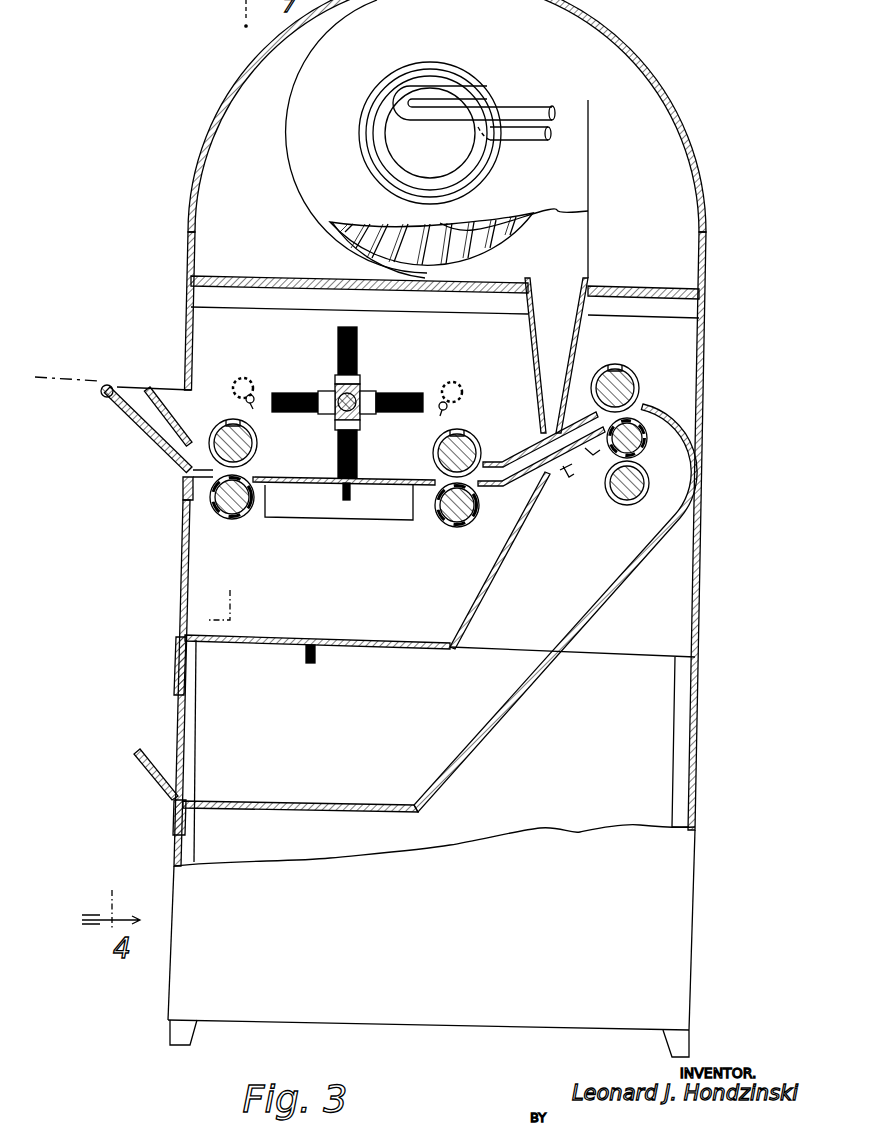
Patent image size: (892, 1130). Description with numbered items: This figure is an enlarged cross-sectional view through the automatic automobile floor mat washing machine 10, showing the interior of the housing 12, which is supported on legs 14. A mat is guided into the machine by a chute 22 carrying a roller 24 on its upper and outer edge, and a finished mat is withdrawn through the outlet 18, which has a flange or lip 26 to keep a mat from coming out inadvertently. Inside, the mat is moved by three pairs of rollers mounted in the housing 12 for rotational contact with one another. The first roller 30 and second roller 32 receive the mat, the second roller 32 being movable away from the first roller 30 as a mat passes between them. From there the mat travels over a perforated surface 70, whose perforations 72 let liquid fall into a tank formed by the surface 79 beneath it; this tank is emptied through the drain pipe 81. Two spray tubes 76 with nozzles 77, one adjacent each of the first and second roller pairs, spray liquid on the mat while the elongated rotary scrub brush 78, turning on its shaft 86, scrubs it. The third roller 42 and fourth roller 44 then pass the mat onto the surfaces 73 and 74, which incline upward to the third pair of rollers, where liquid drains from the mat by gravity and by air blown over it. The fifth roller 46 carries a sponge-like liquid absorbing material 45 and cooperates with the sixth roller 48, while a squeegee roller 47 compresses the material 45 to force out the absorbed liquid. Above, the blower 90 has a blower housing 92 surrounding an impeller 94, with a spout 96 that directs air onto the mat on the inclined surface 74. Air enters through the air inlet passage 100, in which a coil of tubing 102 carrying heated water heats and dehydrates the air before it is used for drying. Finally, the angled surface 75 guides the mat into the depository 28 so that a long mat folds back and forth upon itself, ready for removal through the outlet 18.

The automatic automobile floor mat washing machine 10 is at (661, 78).
The housing 12 is at (707, 348).
The legs 14 is at (171, 1036).
The outlet 18 is at (176, 716).
The chute 22 is at (168, 458).
The roller 24 is at (106, 398).
The flange or lip 26 is at (160, 785).
The depository 28 is at (368, 806).
The first roller 30 is at (232, 519).
The second roller 32 is at (257, 446).
The third roller 42 is at (460, 527).
The fourth roller 44 is at (472, 436).
The liquid absorbing material 45 is at (600, 452).
The fifth roller 46 is at (645, 440).
The squeegee roller 47 is at (624, 505).
The sixth roller 48 is at (640, 393).
The perforated surface 70 is at (388, 487).
The perforations or holes 72 is at (290, 487).
The inclined surface 73 is at (532, 452).
The inclined surface 74 is at (566, 468).
The surface 75 is at (577, 622).
The spray tubes 76 is at (245, 379).
The nozzles 77 is at (256, 396).
The elongated rotary scrub brush 78 is at (358, 392).
The surface 79 is at (468, 603).
The drain pipe 81 is at (315, 655).
The shaft 86 is at (353, 410).
The blower 90 is at (295, 196).
The blower housing 92 is at (588, 160).
The impeller 94 is at (395, 236).
The spout 96 is at (585, 348).
The air inlet passage 100 is at (373, 92).
The coil of tubing 102 is at (530, 104).